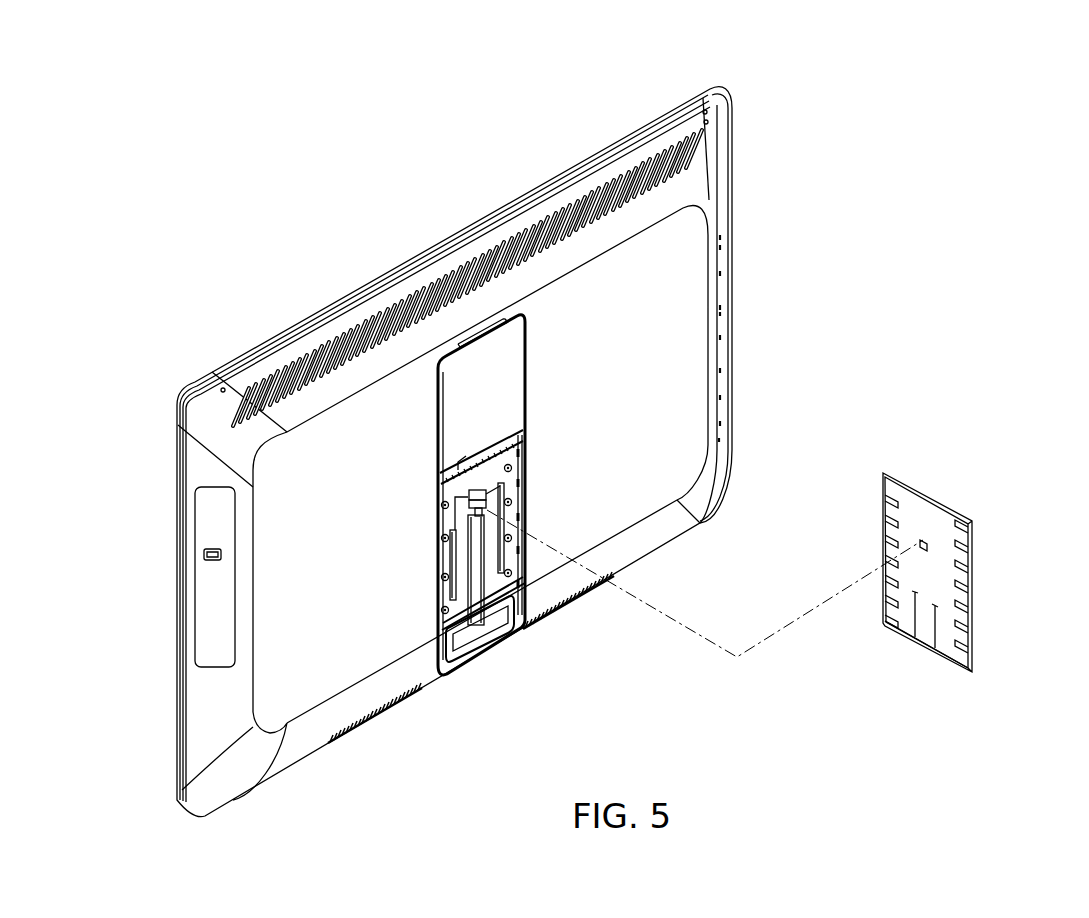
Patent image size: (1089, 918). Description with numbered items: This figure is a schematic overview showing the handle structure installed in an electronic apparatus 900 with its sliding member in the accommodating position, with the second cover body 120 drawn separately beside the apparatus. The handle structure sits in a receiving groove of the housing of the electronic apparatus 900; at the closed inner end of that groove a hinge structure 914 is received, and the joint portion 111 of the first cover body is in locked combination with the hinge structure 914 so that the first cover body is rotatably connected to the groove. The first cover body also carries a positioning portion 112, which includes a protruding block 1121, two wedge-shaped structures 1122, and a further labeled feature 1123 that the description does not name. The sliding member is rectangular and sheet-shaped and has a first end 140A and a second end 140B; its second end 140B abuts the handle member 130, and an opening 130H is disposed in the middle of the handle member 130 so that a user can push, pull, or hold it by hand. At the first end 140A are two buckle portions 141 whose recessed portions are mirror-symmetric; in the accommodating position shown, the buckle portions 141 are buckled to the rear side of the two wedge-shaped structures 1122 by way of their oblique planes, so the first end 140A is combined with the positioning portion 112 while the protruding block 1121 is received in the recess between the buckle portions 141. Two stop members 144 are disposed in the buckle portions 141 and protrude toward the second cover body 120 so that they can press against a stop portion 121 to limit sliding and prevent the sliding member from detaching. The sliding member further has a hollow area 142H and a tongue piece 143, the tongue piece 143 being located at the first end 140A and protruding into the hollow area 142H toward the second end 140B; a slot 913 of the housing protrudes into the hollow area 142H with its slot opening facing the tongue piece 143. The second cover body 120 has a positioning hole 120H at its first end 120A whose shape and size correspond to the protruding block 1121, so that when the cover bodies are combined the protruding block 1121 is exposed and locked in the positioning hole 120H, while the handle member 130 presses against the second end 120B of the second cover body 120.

The electronic apparatus 900 is at (746, 214).
The handle member 130 is at (443, 677).
The opening 130H is at (477, 627).
The joint portion 111 is at (495, 443).
The positioning portion 112 is at (372, 493).
The protruding block 1121 is at (480, 523).
The wedge-shaped structures 1122 is at (473, 512).
The slider upper portion 1123 is at (470, 500).
The buckle portion 141 is at (440, 476).
The tongue piece 143 is at (440, 558).
The stop members 144 is at (488, 482).
The first end of the sliding member 140A is at (525, 485).
The second end of the sliding member 140B is at (530, 587).
The hollow area 142H is at (450, 587).
The slot 913 is at (514, 616).
The hinge structure 914 is at (525, 447).
The second cover body 120 is at (926, 472).
The first end of the second cover body 120A is at (938, 513).
The second end of the second cover body 120B is at (917, 645).
The positioning hole 120H is at (929, 546).
The stop portion 121 is at (938, 606).